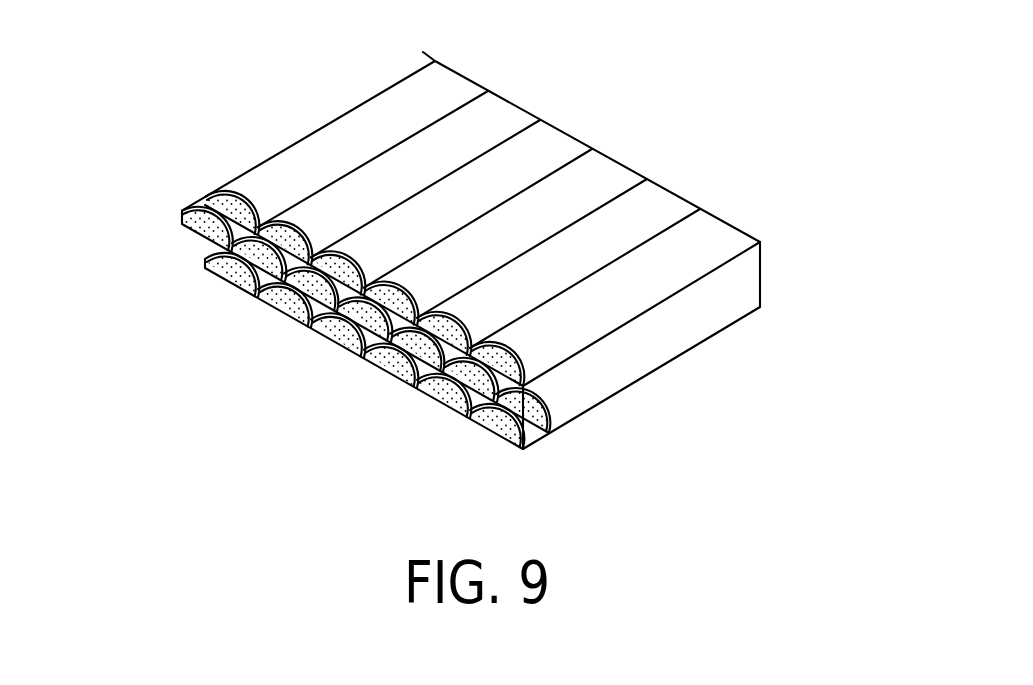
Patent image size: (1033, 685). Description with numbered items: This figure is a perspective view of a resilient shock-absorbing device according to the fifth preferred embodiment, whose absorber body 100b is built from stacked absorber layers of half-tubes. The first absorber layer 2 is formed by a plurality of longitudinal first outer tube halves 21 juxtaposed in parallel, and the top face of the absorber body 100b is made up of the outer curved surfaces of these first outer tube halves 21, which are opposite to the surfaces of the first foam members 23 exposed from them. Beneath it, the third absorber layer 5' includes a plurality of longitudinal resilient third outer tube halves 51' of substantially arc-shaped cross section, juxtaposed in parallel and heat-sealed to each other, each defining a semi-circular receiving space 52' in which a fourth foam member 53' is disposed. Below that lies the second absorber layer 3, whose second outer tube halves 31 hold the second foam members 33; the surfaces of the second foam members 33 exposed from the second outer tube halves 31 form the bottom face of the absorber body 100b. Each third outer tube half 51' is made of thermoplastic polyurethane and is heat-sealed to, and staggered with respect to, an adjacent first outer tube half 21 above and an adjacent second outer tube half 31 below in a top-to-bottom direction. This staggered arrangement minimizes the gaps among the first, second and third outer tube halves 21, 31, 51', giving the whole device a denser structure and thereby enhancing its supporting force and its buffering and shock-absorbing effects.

The absorber body 100b is at (612, 124).
The first absorber layer 2 is at (732, 212).
The first outer tube halves 21 is at (293, 160).
The first foam members 23 is at (465, 323).
The third absorber layer 5' is at (661, 345).
The second absorber layer 3 is at (470, 439).
The second outer tube halves 31 is at (203, 268).
The second foam members 33 is at (393, 360).
The third outer tube halves 51' is at (198, 181).
The semi-circular receiving space 52' is at (158, 234).
The fourth foam members 53' is at (169, 266).